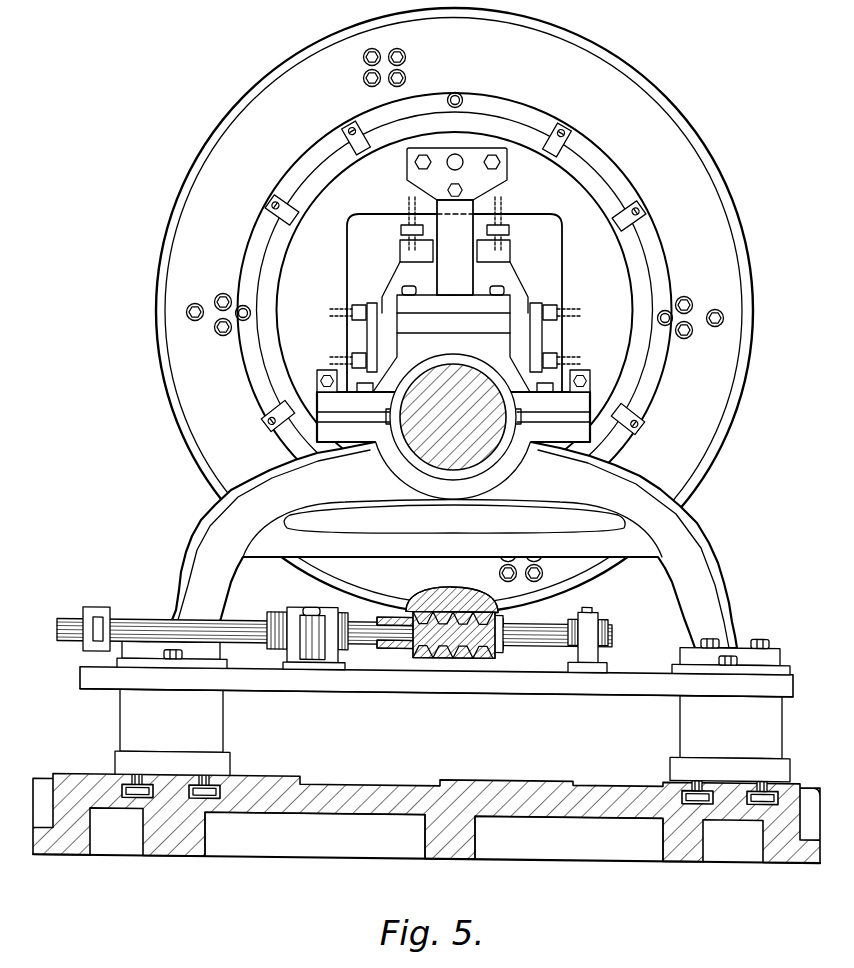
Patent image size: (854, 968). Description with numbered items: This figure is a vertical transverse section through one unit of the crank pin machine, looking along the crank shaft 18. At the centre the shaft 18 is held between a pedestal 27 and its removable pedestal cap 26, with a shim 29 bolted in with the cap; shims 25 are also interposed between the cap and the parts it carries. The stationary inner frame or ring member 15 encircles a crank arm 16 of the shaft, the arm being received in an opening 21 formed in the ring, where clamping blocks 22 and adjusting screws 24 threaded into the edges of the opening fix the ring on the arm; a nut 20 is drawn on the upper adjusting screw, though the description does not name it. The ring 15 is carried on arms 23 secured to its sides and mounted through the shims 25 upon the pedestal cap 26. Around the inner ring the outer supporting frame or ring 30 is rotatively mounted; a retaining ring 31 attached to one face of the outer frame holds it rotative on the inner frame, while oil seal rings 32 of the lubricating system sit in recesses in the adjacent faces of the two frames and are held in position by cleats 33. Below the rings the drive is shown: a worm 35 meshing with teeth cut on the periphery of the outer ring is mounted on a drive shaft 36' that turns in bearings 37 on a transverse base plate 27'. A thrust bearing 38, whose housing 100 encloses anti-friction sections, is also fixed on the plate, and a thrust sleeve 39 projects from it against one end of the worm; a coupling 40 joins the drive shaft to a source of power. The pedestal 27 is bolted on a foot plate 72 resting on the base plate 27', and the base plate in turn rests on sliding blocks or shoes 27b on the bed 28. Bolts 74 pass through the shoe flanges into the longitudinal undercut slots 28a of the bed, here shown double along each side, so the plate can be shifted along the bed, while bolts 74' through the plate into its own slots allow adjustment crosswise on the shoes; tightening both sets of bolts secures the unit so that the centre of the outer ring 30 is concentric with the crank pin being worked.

The inner frame or ring member 15 is at (333, 344).
The crank arm 16 is at (501, 258).
The crank shaft 18 is at (408, 436).
The adjusting nut 20 is at (510, 232).
The opening 21 is at (454, 303).
The block 22 is at (528, 300).
The arm 23 is at (440, 268).
The adjusting screw 24 is at (412, 163).
The shim 25 is at (404, 324).
The pedestal cap 26 is at (500, 352).
The pedestal 27 is at (450, 520).
The base plate 27' is at (436, 699).
The sliding block or shoe 27b is at (452, 735).
The bed 28 is at (338, 790).
The longitudinal slot 28a is at (220, 801).
The shim 29 is at (318, 414).
The outer supporting frame or ring 30 is at (730, 258).
The retaining ring 31 is at (650, 234).
The oil seal ring 32 is at (624, 404).
The cleat 33 is at (602, 192).
The worm 35 is at (451, 660).
The drive shaft 36' is at (334, 670).
The bearing 37 is at (590, 617).
The thrust bearing 38 is at (303, 624).
The thrust sleeve 39 is at (395, 649).
The coupling 40 is at (100, 611).
The foot plate 72 is at (788, 669).
The bolt 74 is at (470, 760).
The bolt 74' is at (453, 627).
The housing 100 is at (323, 609).